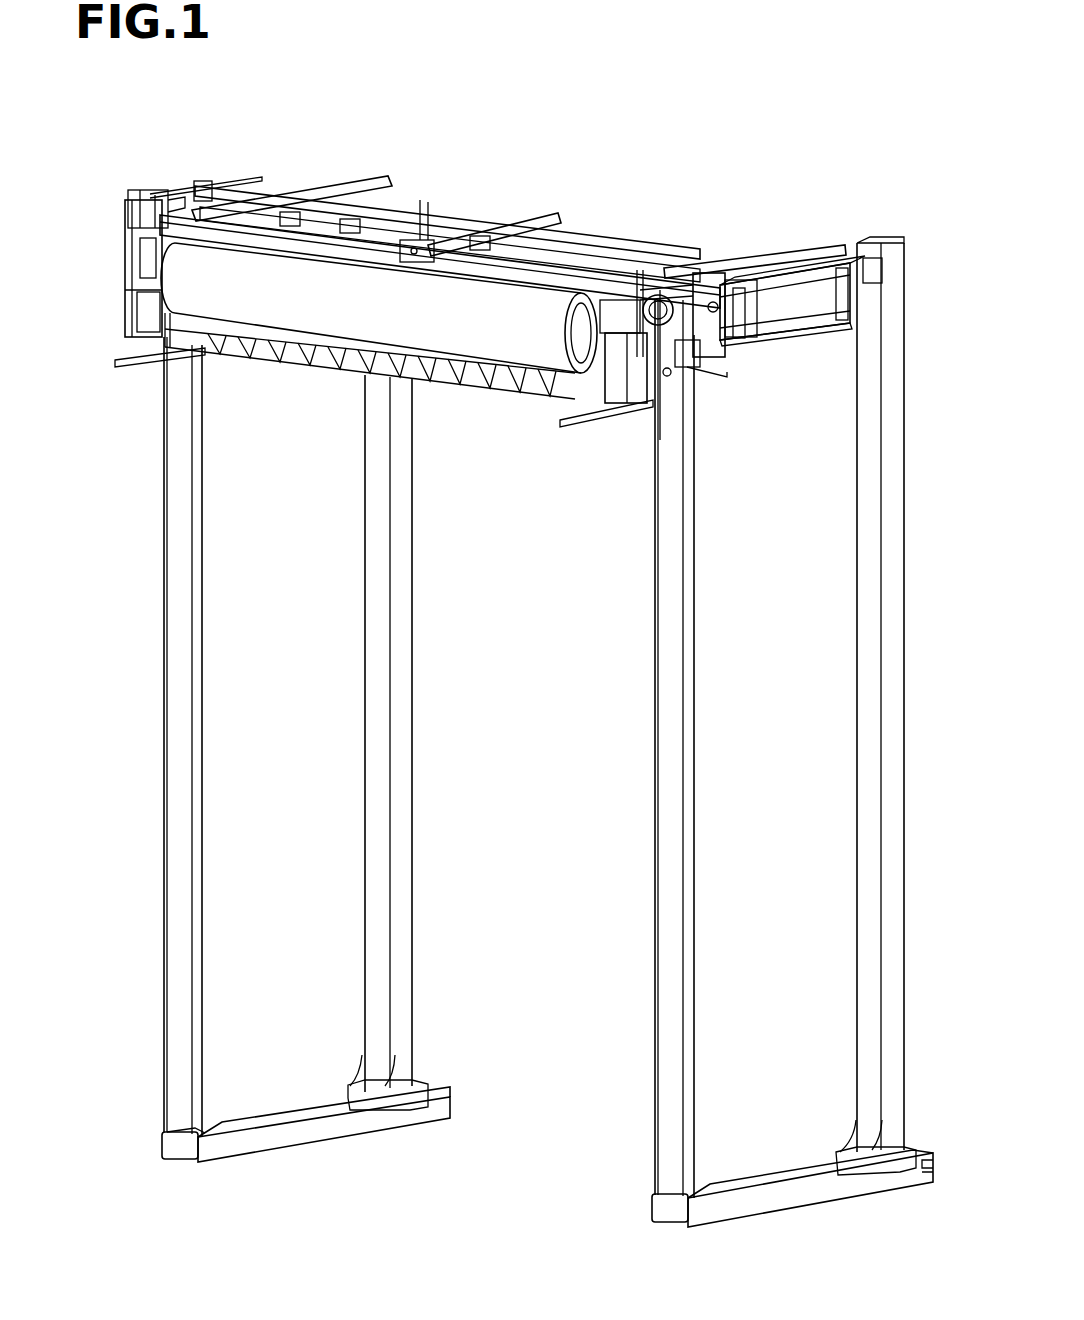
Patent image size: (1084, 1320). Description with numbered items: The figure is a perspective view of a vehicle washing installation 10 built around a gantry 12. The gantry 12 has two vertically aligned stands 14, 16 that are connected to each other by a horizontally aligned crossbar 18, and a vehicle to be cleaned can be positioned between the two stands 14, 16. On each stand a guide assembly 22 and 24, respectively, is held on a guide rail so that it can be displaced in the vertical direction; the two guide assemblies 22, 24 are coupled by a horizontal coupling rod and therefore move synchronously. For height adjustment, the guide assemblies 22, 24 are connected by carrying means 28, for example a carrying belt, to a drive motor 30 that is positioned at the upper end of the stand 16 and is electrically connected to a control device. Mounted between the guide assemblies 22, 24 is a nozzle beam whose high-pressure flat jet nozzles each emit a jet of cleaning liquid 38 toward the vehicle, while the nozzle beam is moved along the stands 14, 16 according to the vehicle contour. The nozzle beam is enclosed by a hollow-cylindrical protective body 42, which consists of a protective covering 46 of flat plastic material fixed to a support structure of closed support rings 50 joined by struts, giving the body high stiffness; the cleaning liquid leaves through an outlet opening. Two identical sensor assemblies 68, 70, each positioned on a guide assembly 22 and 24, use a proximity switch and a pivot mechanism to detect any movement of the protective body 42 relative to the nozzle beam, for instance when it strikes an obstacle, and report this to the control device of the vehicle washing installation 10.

The vehicle washing installation 10 is at (620, 180).
The gantry 12 is at (299, 170).
The stand 14 is at (202, 567).
The stand 16 is at (694, 637).
The crossbar 18 is at (448, 200).
The guide assembly 22 is at (114, 322).
The guide assembly 24 is at (670, 402).
The carrying means 28 is at (410, 240).
The drive motor 30 is at (668, 372).
The jet of cleaning liquid 38 is at (313, 364).
The protective body 42 is at (464, 342).
The protective covering 46 is at (527, 338).
The support ring 50 is at (137, 290).
The sensor assembly 68 is at (140, 193).
The sensor assembly 70 is at (634, 262).